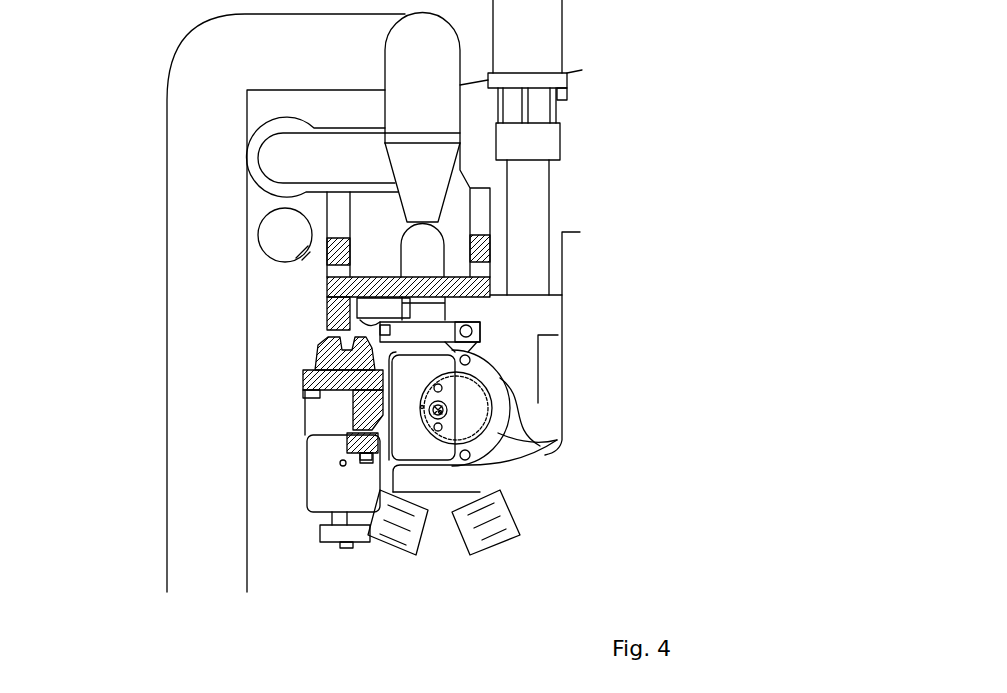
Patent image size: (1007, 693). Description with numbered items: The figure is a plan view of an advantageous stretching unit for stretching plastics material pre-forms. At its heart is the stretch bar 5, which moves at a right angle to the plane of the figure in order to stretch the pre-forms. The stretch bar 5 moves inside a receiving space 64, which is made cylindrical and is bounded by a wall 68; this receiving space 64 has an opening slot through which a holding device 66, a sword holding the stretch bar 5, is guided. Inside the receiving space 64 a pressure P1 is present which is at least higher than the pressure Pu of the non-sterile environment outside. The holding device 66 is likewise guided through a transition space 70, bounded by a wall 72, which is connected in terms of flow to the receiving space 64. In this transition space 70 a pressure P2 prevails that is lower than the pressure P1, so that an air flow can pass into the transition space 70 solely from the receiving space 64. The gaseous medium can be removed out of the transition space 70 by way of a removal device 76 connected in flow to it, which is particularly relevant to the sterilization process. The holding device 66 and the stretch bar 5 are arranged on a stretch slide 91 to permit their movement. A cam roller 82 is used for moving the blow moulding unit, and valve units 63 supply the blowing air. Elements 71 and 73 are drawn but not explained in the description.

The removal device 76 is at (127, 90).
The pressure of the non-sterile environment outside Pu is at (636, 163).
The wall 72 is at (425, 365).
The transition space 70 is at (460, 352).
The wall 68 is at (475, 382).
The receiving space 64 is at (477, 405).
The holding device 66 is at (440, 418).
The stretch bar 5 is at (470, 393).
The valve units 63 is at (447, 418).
The stretch slide 91 is at (420, 410).
The clamping piece 71 is at (405, 373).
The locking element 73 is at (417, 408).
The cam roller 82 is at (347, 530).
The pressure in the transition space P2 is at (422, 407).
The pressure in the receiving space P1 is at (440, 412).